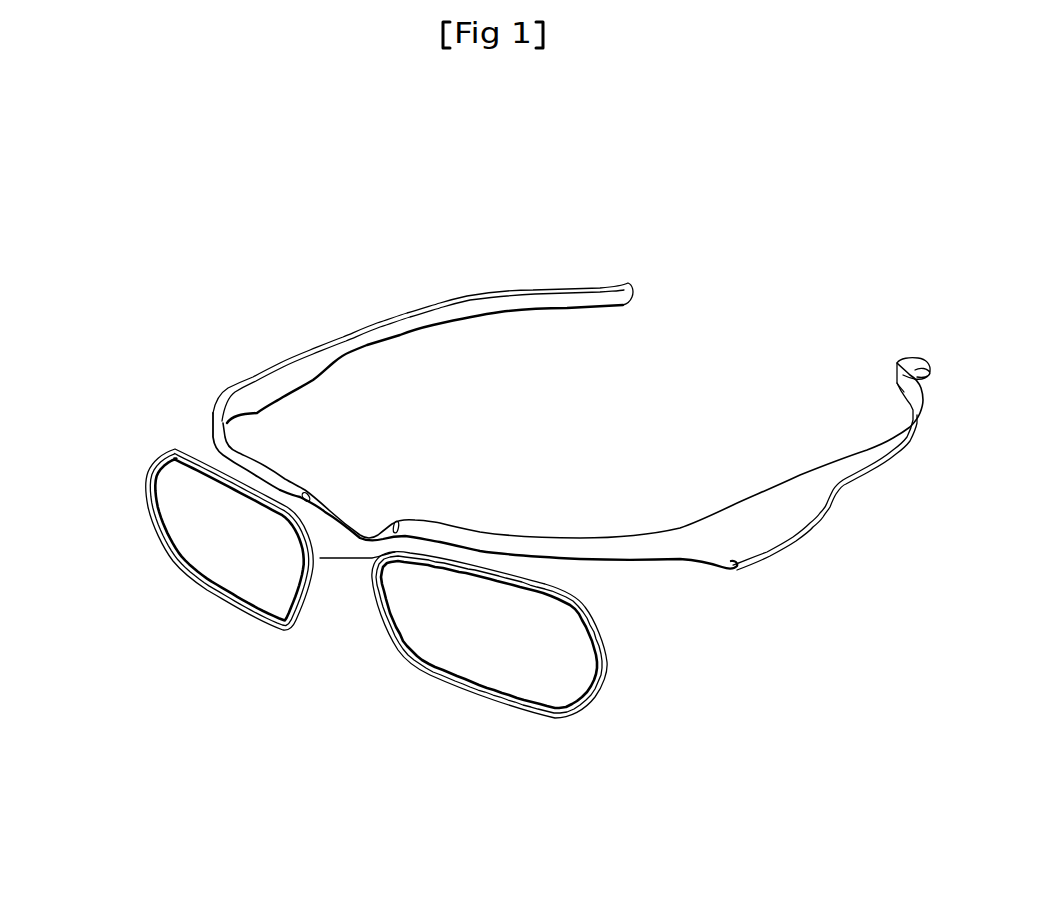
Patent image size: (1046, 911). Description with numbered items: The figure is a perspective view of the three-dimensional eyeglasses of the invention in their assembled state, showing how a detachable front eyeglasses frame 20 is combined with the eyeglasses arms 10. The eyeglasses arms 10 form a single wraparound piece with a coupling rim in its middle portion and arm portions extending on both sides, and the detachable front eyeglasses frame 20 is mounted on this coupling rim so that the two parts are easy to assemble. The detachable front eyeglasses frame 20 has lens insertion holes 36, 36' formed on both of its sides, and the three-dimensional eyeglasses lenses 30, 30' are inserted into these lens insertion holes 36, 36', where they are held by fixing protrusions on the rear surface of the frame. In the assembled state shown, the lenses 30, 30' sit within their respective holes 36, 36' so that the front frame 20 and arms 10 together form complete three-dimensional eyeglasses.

The eyeglasses arms 10 is at (733, 538).
The detachable front eyeglasses frame 20 is at (605, 651).
The 3D eyeglasses lens 30 is at (441, 636).
The lens insertion hole 36 is at (470, 656).
The 3D eyeglasses lens 30' is at (180, 540).
The lens insertion hole 36' is at (209, 540).